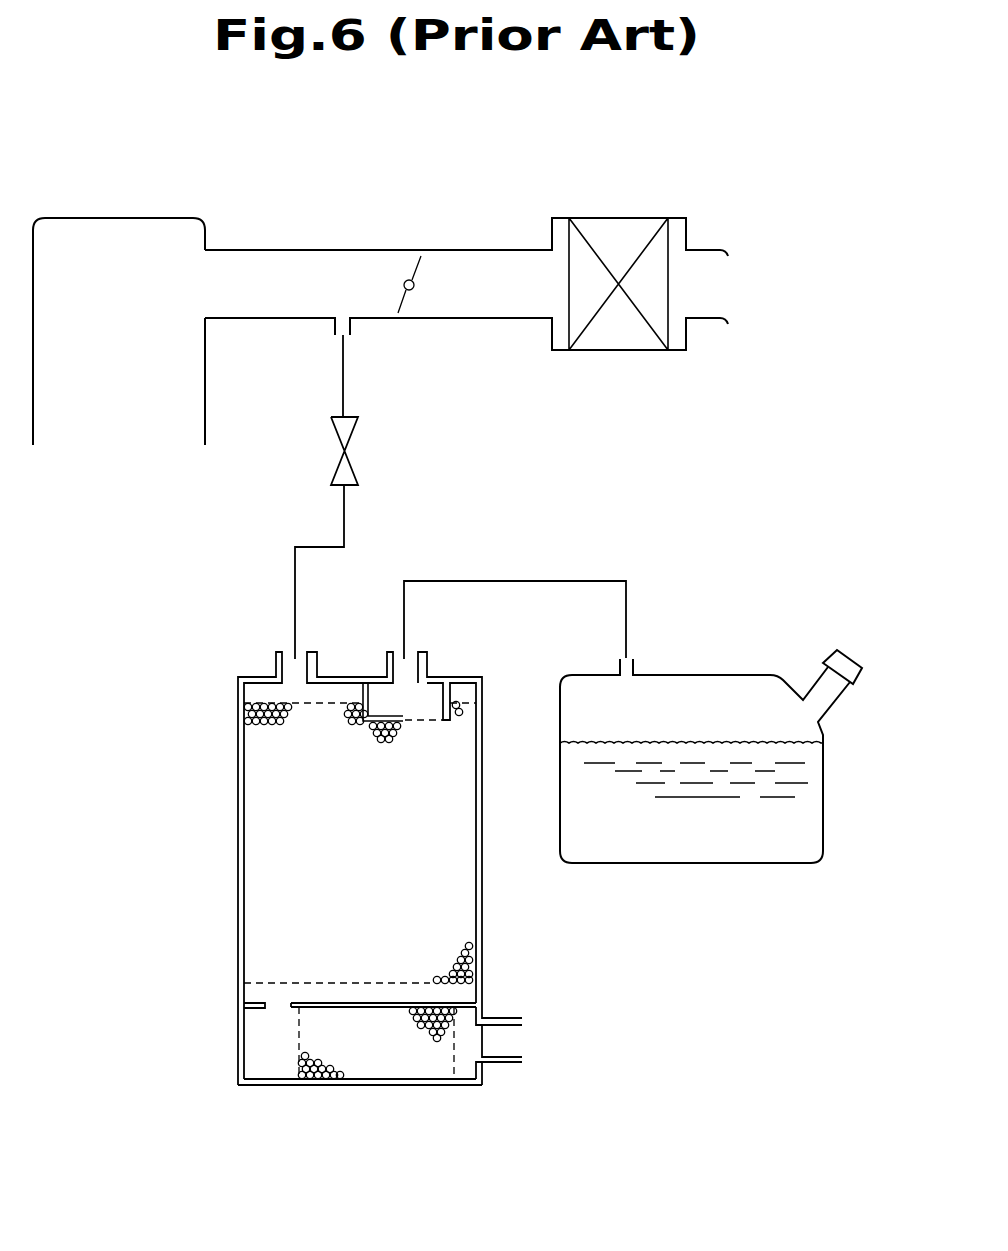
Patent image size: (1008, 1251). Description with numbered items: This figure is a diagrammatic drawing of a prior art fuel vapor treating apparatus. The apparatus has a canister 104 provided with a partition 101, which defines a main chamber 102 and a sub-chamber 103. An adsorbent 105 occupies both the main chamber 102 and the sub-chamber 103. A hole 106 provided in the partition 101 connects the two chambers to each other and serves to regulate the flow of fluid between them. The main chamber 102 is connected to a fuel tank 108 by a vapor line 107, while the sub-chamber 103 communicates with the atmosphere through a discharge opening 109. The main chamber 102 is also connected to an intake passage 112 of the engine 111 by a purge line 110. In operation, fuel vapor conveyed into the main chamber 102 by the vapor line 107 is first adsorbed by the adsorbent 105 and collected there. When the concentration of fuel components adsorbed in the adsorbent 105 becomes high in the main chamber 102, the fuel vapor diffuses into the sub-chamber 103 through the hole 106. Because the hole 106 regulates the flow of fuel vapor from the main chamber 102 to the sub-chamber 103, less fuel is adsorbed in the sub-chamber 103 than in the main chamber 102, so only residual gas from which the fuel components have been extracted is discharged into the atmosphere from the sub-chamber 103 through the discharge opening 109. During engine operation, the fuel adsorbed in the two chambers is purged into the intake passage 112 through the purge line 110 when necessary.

The partition 101 is at (437, 998).
The main chamber 102 is at (481, 802).
The sub-chamber 103 is at (393, 1086).
The canister 104 is at (237, 852).
The adsorbent 105 is at (250, 731).
The hole 106 is at (277, 1006).
The vapor line 107 is at (544, 580).
The fuel tank 108 is at (823, 806).
The discharge opening 109 is at (502, 1042).
The purge line 110 is at (346, 510).
The engine 111 is at (133, 227).
The intake passage 112 is at (312, 294).